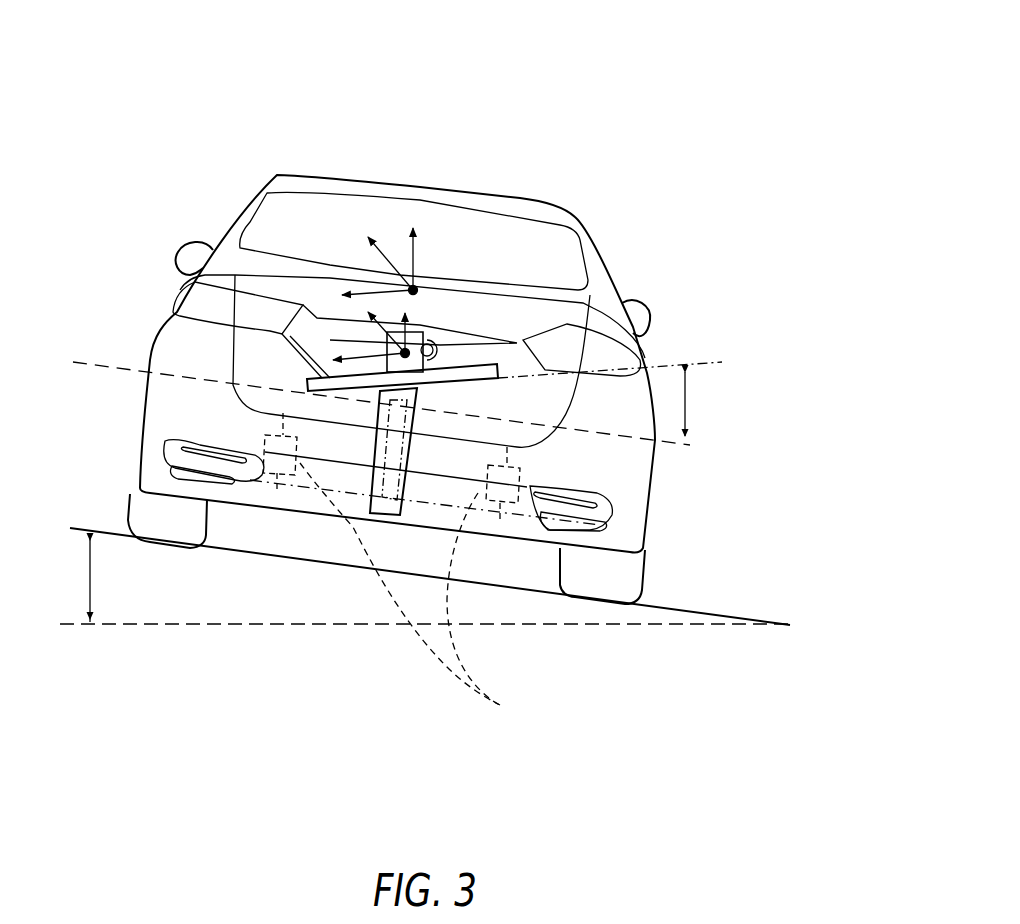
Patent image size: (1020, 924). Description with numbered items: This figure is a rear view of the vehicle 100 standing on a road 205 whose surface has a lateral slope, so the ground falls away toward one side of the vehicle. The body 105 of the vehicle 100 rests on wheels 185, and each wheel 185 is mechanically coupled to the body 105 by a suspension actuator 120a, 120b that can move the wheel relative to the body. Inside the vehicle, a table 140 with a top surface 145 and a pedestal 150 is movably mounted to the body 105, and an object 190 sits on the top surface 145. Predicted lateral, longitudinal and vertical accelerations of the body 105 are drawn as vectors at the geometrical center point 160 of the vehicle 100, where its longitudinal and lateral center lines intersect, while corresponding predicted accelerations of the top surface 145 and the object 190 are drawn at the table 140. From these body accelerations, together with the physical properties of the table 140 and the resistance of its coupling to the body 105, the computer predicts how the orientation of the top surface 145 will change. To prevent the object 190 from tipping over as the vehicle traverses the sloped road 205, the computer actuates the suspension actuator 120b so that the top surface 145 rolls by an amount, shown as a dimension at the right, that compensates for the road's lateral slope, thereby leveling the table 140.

The vehicle 100 is at (702, 69).
The body 105 is at (653, 447).
The suspension actuator 120a is at (426, 593).
The suspension actuator 120b is at (377, 449).
The table 140 is at (292, 373).
The top surface 145 is at (437, 353).
The pedestal 150 is at (412, 443).
The geometrical center point 160 is at (448, 292).
The wheel 185 is at (130, 512).
The object 190 is at (465, 365).
The road 205 is at (640, 597).